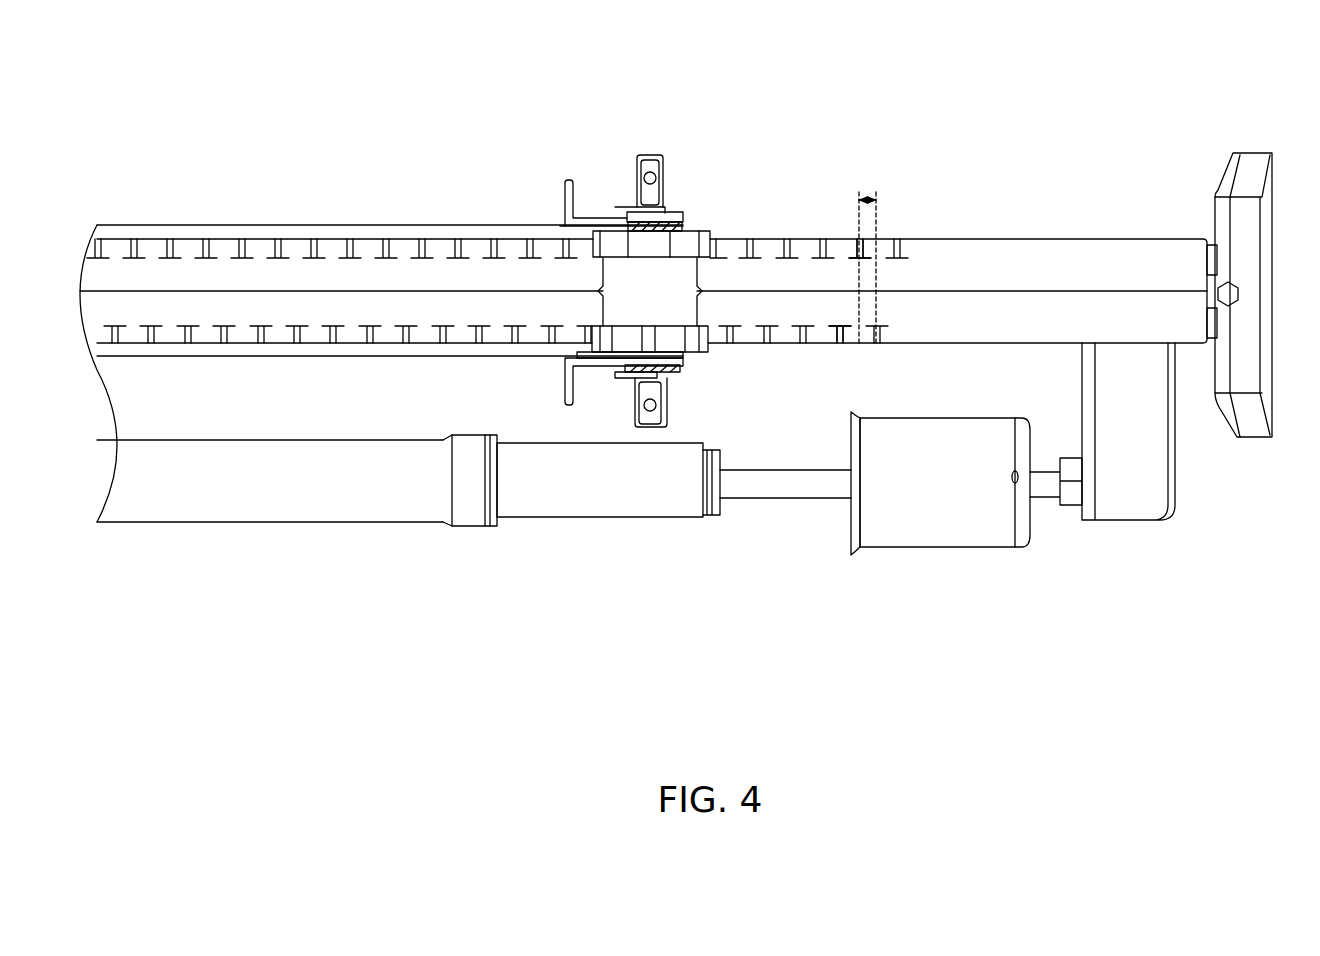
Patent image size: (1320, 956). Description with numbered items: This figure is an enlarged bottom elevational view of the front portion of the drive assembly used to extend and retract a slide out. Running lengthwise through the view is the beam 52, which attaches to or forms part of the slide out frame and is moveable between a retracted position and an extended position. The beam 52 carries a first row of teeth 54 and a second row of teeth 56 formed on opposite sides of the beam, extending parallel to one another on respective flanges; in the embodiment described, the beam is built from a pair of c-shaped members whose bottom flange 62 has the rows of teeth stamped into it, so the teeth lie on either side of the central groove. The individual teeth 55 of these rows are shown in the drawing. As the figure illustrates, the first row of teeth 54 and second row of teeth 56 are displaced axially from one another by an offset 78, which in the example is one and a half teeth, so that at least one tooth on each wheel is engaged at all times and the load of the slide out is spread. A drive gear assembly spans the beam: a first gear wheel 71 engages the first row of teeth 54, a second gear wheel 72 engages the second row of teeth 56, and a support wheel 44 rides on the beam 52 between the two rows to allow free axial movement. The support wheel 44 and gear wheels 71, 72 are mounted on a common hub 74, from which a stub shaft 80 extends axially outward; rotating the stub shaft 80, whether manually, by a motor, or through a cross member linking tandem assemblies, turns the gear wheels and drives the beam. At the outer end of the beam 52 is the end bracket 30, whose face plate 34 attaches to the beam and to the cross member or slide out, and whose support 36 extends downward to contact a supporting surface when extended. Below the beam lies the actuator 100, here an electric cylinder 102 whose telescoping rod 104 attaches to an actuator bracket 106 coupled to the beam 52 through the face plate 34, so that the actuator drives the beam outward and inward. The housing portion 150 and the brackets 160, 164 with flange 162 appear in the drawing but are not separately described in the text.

The end bracket 30 is at (1264, 135).
The face plate 34 is at (1247, 318).
The support 36 is at (1240, 298).
The support wheel 44 is at (650, 292).
The beam 52 is at (652, 291).
The first row of teeth 54 is at (779, 347).
The teeth 55 is at (800, 238).
The second row of teeth 56 is at (752, 238).
The bottom flange 62 is at (643, 292).
The first gear wheel 71 is at (597, 336).
The second gear wheel 72 is at (600, 245).
The hub 74 is at (696, 228).
The offset 78 is at (868, 198).
The stub shaft 80 is at (653, 153).
The actuator 100 is at (270, 481).
The electric cylinder 102 is at (544, 480).
The telescoping rod 104 is at (785, 484).
The actuator bracket 106 is at (1013, 449).
The rail housing 150 is at (284, 190).
The lower bracket 160 is at (560, 380).
The flange 162 is at (552, 212).
The upper bracket 164 is at (565, 200).